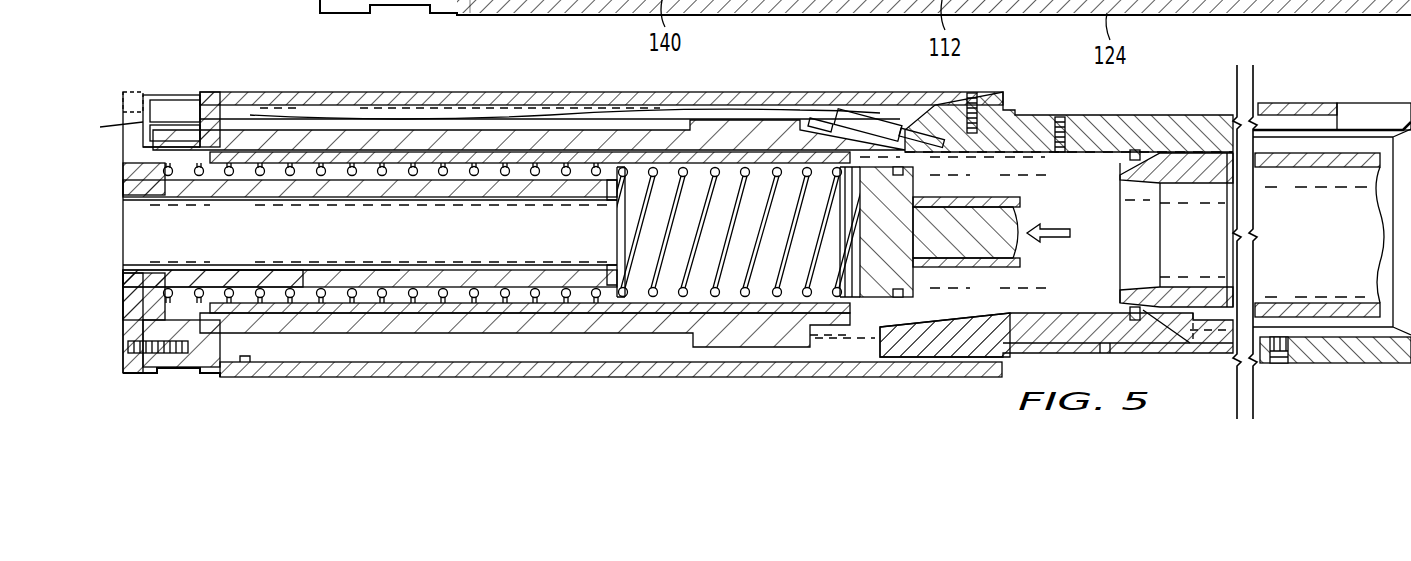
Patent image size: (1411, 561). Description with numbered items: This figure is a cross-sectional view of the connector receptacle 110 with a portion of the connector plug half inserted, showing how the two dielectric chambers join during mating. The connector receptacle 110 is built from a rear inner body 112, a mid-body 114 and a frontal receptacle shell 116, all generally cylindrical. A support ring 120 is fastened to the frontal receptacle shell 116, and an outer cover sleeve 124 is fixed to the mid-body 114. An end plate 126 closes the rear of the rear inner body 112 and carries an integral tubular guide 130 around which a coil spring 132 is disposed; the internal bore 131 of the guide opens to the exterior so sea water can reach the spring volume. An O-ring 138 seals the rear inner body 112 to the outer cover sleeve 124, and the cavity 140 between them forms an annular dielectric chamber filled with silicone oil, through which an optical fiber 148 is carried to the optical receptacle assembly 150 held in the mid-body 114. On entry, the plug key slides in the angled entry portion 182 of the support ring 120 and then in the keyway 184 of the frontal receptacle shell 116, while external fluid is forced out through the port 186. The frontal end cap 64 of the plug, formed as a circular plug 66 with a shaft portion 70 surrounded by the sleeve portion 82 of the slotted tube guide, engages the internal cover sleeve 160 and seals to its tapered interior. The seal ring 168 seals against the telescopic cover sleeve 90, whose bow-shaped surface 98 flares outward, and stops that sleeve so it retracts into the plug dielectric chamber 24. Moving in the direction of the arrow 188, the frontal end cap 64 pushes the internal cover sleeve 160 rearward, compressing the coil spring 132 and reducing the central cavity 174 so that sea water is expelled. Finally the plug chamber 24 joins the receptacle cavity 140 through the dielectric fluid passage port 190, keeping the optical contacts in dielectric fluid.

The dielectric chamber 24 is at (1339, 254).
The frontal end cap 64 is at (848, 265).
The circular plug 66 is at (900, 246).
The shaft portion 70 is at (987, 246).
The sleeve portion 82 is at (975, 198).
The telescopic cover sleeve 90 is at (1315, 345).
The bow-shaped surface 98 is at (1155, 278).
The connector receptacle 110 is at (270, 70).
The rear inner body 112 is at (640, 330).
The mid-body 114 is at (1035, 135).
The frontal receptacle shell 116 is at (1183, 355).
The support ring 120 is at (1370, 363).
The outer cover sleeve 124 is at (765, 92).
The end plate 126 is at (123, 330).
The tubular guide 130 is at (235, 275).
The internal bore 131 is at (378, 272).
The coil spring 132 is at (615, 225).
The O-ring 138 is at (496, 0).
The cavity 140 is at (605, 113).
The optical fiber 148 is at (365, 107).
The optical receptacle assembly 150 is at (866, 120).
The internal cover sleeve 160 is at (568, 330).
The seal ring 168 is at (1125, 295).
The central cavity 174 is at (480, 254).
The angled entry portion 182 is at (1375, 108).
The keyway 184 is at (1295, 115).
The port 186 is at (1160, 130).
The arrow 188 is at (1057, 228).
The dielectric fluid passage port 190 is at (880, 335).